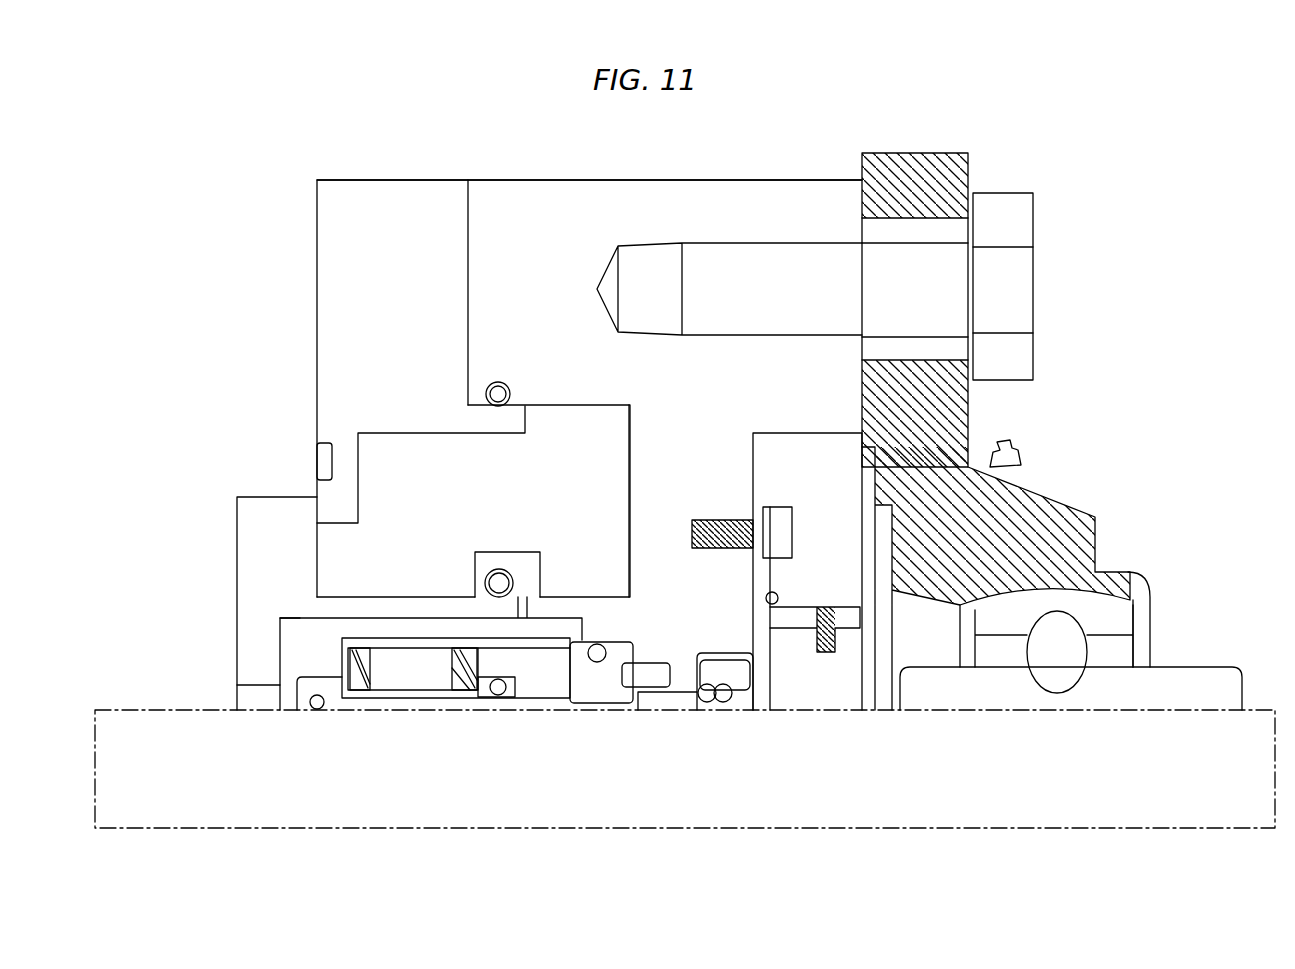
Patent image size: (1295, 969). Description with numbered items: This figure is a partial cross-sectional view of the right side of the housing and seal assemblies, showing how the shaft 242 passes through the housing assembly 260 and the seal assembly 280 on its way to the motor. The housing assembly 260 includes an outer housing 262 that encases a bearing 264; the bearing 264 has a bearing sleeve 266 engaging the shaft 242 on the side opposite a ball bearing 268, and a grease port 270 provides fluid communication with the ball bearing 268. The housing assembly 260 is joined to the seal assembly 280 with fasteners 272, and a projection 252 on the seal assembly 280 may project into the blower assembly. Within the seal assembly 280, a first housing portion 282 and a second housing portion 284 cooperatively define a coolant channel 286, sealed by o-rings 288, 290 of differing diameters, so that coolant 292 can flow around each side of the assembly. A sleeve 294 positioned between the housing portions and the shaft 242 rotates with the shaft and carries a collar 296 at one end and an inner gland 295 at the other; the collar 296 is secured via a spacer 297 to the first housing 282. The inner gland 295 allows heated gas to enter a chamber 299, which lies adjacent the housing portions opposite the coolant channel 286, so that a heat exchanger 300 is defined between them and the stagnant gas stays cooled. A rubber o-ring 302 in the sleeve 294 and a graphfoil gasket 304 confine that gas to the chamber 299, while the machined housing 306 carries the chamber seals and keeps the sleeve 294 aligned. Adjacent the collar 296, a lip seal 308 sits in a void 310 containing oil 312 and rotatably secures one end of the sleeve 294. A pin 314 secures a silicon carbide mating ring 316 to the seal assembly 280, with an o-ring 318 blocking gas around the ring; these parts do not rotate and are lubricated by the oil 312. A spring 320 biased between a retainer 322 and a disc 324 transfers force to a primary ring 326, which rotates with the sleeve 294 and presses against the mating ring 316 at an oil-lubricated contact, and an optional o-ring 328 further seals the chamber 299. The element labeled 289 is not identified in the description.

The shaft 242 is at (1172, 784).
The projection 252 is at (237, 495).
The housing assembly 260 is at (930, 153).
The outer housing 262 is at (1060, 495).
The bearing 264 is at (1150, 612).
The bearing sleeve 266 is at (1170, 667).
The ball bearing 268 is at (1065, 650).
The grease port 270 is at (1005, 445).
The fasteners 272 is at (1005, 285).
The seal assembly 280 is at (587, 180).
The first housing portion 282 is at (550, 285).
The second housing portion 284 is at (390, 270).
The coolant channel 286 is at (470, 460).
The o-ring 288 is at (480, 393).
The adjustment screw 289 is at (780, 520).
The o-ring 290 is at (477, 582).
The coolant 292 is at (583, 437).
The sleeve 294 is at (412, 707).
The inner gland 295 is at (250, 710).
The collar 296 is at (798, 695).
The spacer 297 is at (770, 595).
The chamber 299 is at (290, 652).
The heat exchanger 300 is at (390, 605).
The rubber o-ring 302 is at (310, 715).
The gasket 304 is at (315, 462).
The machined housing 306 is at (632, 625).
The lip seal 308 is at (740, 700).
The void 310 is at (710, 702).
The oil 312 is at (650, 705).
The pin 314 is at (648, 672).
The mating ring 316 is at (600, 683).
The o-ring 318 is at (597, 662).
The spring 320 is at (385, 675).
The retainer 322 is at (395, 645).
The disc 324 is at (452, 687).
The primary ring 326 is at (562, 676).
The o-ring 328 is at (487, 693).